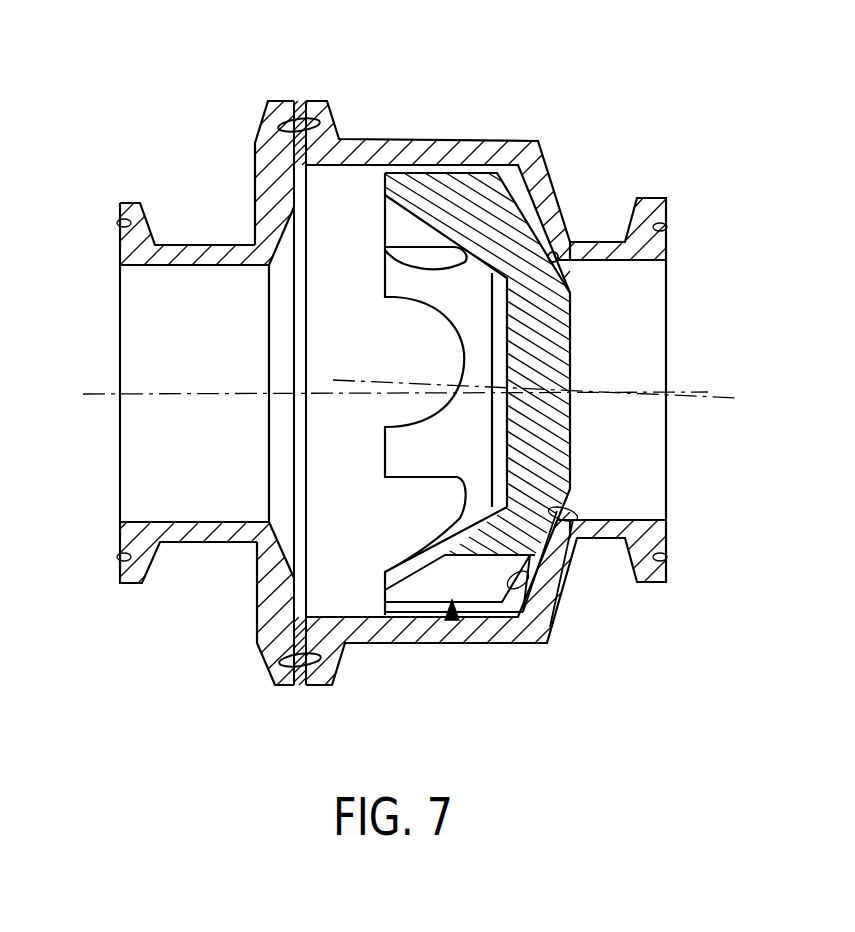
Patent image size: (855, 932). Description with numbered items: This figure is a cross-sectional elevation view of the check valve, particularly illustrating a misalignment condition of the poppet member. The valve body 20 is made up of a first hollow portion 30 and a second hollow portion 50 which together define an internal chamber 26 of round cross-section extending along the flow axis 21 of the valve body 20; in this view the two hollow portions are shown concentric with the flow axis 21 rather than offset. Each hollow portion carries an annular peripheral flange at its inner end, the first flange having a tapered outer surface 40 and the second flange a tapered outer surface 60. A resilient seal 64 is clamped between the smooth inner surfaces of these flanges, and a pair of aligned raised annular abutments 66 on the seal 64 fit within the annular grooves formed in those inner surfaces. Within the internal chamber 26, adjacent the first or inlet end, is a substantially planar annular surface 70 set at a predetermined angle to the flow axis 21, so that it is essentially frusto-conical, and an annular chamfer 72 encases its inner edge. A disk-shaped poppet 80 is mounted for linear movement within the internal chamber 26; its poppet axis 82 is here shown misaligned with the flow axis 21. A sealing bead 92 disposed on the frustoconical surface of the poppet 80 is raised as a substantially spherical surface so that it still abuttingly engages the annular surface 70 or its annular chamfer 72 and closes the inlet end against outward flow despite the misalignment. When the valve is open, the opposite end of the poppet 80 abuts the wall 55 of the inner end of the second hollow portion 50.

The valve body 20 is at (560, 70).
The flow axis 21 is at (700, 391).
The internal chamber 26 is at (343, 350).
The first hollow portion 30 is at (557, 190).
The tapered outer surface 40 is at (345, 665).
The second hollow portion 50 is at (255, 213).
The wall of the inner end of the second portion 55 is at (258, 542).
The tapered outer surface 60 is at (268, 660).
The resilient seal 64 is at (298, 102).
The raised annular abutments 66 is at (275, 124).
The annular surface 70 is at (515, 582).
The annular chamfer 72 is at (545, 513).
The poppet 80 is at (455, 622).
The poppet axis 82 is at (725, 400).
The sealing bead 92 is at (560, 262).